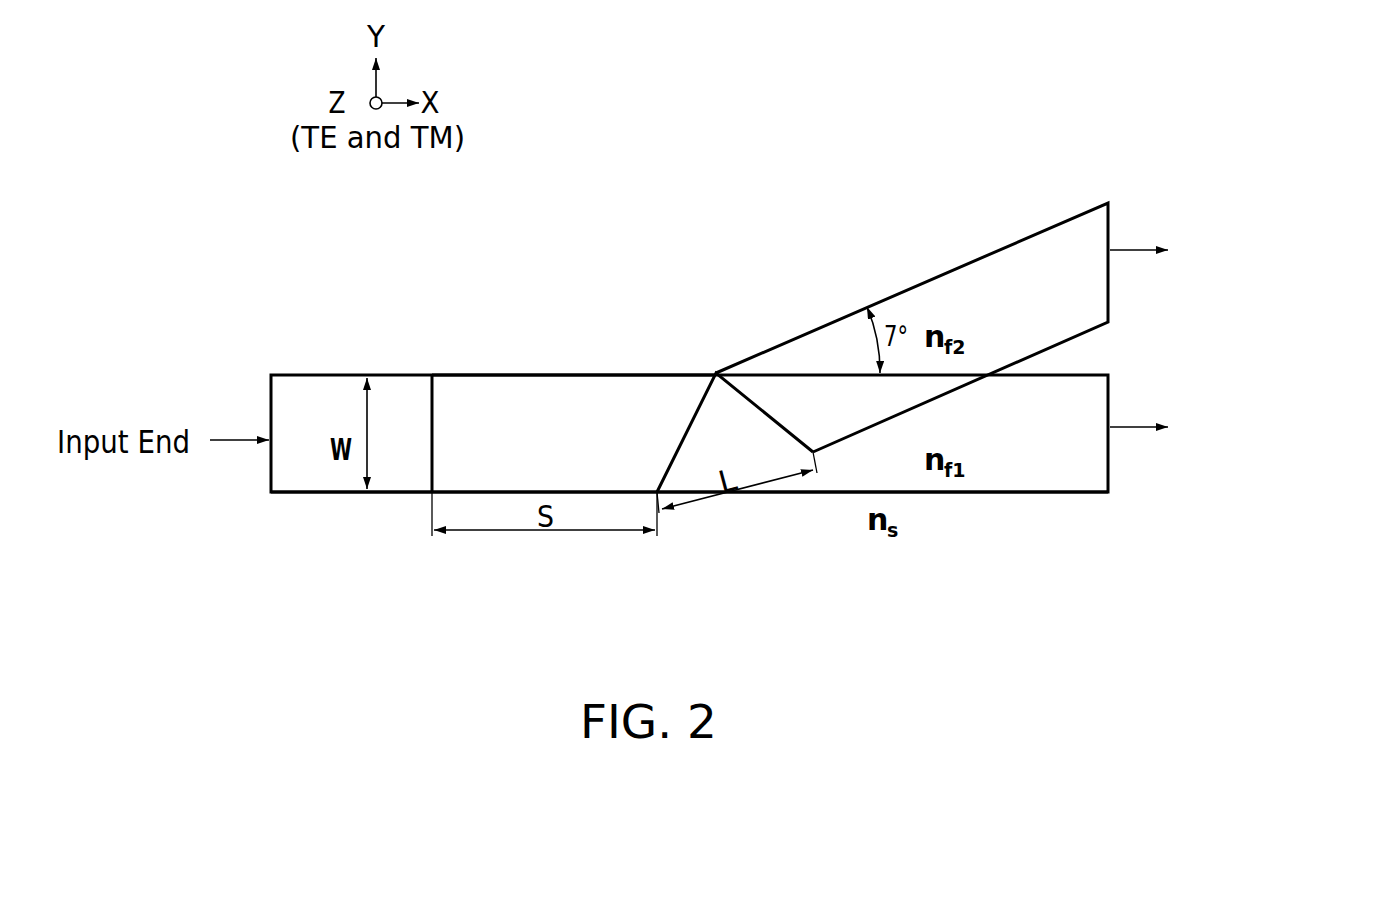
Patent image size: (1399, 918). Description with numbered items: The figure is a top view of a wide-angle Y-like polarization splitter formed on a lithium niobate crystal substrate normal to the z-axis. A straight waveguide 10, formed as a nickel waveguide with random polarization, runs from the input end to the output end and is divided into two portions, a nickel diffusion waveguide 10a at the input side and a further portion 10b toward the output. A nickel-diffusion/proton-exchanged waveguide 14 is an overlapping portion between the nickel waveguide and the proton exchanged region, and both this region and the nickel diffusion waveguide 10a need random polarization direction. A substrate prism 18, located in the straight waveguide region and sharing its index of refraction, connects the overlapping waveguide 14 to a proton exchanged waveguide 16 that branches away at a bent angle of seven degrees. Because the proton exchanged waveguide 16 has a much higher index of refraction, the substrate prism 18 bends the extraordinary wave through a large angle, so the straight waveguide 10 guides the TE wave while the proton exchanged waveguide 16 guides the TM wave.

The straight waveguide 10 is at (1132, 583).
The nickel diffusion waveguide 10a is at (398, 487).
The straight waveguide portion 10b is at (947, 480).
The nickel-diffusion/proton-exchanged waveguide 14 is at (458, 370).
The proton exchanged waveguide 16 is at (1075, 306).
The substrate prism 18 is at (719, 390).